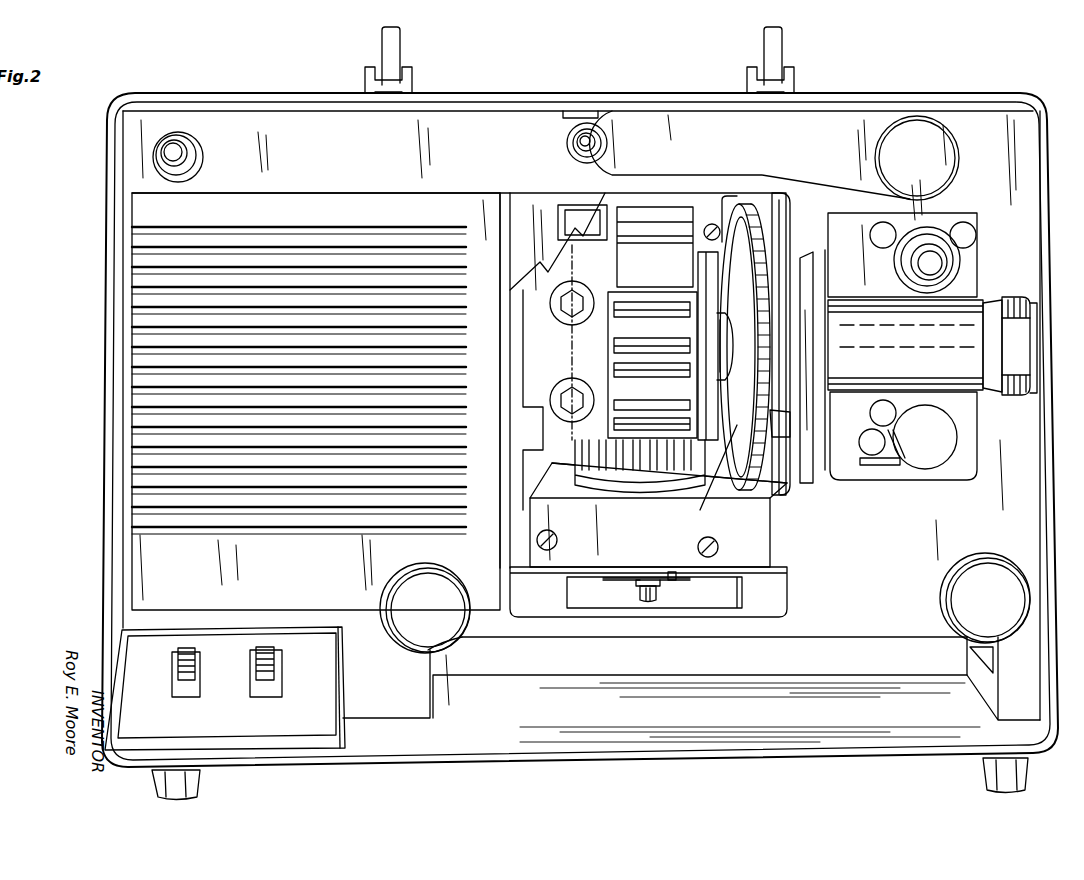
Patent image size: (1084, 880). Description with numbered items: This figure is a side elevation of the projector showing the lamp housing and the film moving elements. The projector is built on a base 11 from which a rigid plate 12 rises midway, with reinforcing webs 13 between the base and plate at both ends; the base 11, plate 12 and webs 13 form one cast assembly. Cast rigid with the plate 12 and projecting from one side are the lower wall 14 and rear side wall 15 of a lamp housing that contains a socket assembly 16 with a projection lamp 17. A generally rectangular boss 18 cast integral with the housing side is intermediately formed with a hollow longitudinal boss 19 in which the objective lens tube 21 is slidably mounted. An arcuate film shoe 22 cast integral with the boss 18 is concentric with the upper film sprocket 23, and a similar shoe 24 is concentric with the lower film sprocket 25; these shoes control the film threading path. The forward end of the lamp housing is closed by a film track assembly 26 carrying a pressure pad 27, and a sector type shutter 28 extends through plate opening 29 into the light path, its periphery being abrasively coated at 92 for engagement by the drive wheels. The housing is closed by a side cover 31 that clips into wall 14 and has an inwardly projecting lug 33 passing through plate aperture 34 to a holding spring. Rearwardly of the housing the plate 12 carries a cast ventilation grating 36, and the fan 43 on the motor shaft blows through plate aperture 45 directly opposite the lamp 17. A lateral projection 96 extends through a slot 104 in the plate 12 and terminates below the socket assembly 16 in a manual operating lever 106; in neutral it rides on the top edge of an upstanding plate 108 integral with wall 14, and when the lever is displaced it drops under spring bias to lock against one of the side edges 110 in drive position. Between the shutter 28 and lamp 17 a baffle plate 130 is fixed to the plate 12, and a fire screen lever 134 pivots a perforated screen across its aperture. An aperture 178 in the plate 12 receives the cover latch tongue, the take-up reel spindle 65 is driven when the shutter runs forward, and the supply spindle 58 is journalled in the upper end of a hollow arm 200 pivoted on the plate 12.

The base 11 is at (935, 740).
The rigid plate 12 is at (848, 614).
The reinforcing webs 13 is at (120, 631).
The lower wall 14 is at (545, 620).
The rear side wall 15 is at (517, 313).
The socket assembly 16 is at (644, 534).
The projection lamp 17 is at (572, 340).
The rectangular boss 18 is at (857, 480).
The hollow longitudinal boss 19 is at (978, 302).
The objective lens tube 21 is at (988, 384).
The arcuate film shoe 22 is at (930, 220).
The upper film sprocket 23 is at (956, 262).
The film shoe 24 is at (905, 480).
The lower film sprocket 25 is at (955, 440).
The film track assembly 26 is at (790, 214).
The pressure pad 27 is at (808, 268).
The sector type shutter 28 is at (762, 205).
The plate opening 29 is at (717, 212).
The side cover 31 is at (542, 196).
The inwardly projecting lug 33 is at (596, 205).
The plate aperture 34 is at (604, 228).
The cast ventilation grating 36 is at (308, 228).
The fan 43 is at (652, 300).
The plate aperture 45 is at (613, 329).
The supply spindle 58 is at (606, 143).
The take-up reel spindle 65 is at (182, 150).
The abrasive coating 92 is at (752, 462).
The lateral projection 96 is at (650, 579).
The slot 104 is at (726, 580).
The manual operating lever 106 is at (648, 602).
The upstanding plate 108 is at (670, 572).
The side edges 110 is at (605, 578).
The baffle plate 130 is at (714, 475).
The fire screen lever 134 is at (716, 336).
The aperture 178 is at (580, 109).
The hollow arm 200 is at (866, 175).